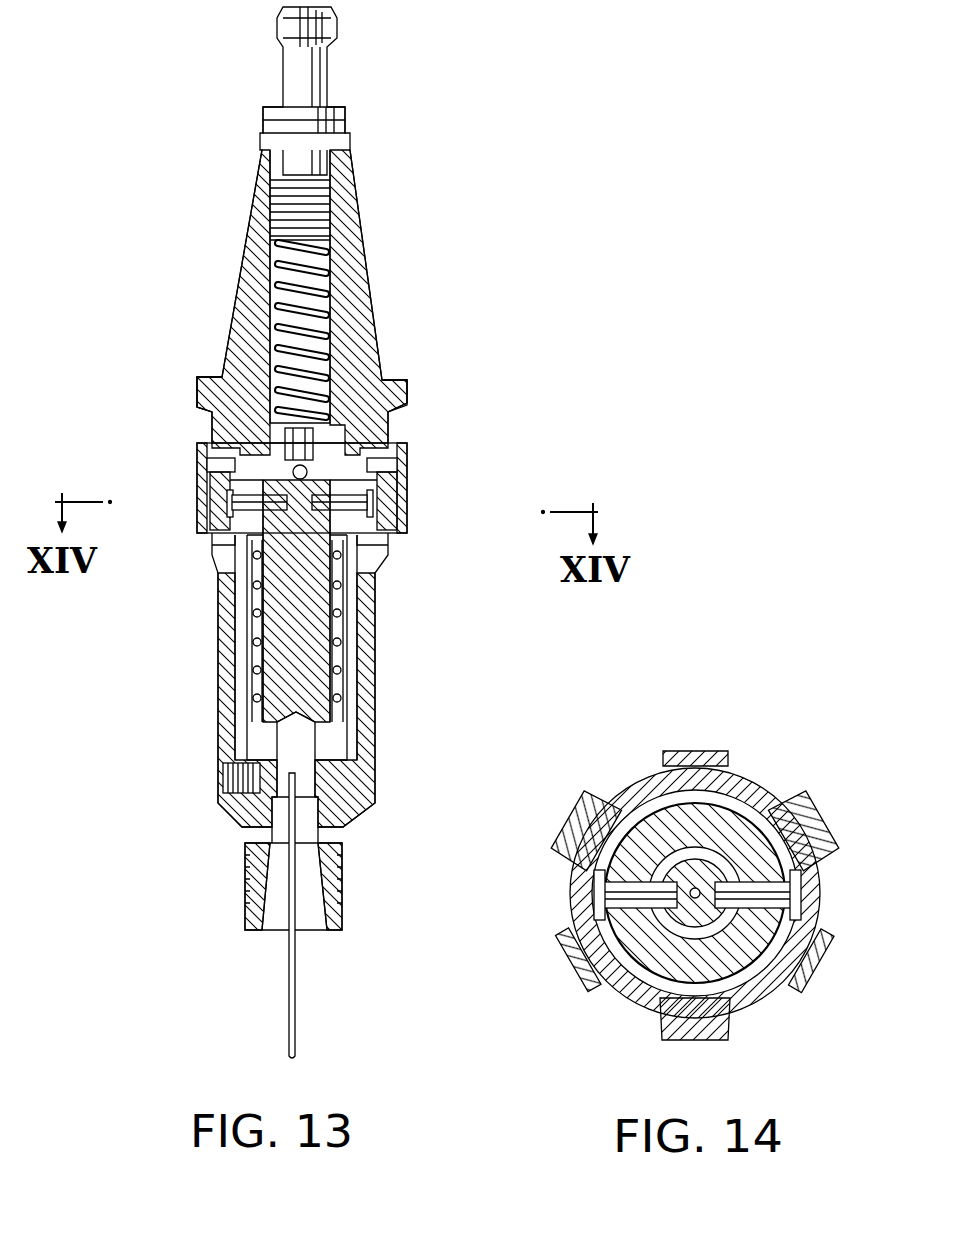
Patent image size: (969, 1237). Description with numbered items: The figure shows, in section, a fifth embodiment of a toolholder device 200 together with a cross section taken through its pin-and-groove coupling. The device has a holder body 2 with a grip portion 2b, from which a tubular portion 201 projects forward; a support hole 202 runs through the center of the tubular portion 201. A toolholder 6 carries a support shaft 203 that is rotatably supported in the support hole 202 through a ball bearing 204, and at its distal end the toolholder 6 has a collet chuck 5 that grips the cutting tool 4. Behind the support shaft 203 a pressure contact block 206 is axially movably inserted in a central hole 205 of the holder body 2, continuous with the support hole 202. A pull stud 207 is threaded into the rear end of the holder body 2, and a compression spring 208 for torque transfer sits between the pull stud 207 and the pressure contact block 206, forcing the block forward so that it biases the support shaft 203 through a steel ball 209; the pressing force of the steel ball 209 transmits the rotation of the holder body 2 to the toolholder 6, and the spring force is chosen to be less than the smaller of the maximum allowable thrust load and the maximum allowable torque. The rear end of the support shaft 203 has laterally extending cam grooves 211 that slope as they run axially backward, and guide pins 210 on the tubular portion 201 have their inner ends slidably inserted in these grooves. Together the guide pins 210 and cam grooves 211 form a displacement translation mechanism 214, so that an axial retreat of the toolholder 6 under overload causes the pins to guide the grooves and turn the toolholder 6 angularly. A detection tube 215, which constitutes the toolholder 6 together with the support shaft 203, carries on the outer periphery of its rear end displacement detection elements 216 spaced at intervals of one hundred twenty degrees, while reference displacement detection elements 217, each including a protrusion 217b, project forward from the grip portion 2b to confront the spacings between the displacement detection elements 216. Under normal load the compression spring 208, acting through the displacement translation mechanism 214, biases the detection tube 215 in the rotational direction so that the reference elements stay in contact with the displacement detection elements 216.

In FIG. 13, the toolholder device 200 is at (228, 274).
In FIG. 13, the holder body 2 is at (356, 195).
In FIG. 13, the grip portion 2b is at (400, 393).
In FIG. 13, the pull stud 207 is at (347, 121).
In FIG. 13, the compression spring 208 is at (320, 263).
In FIG. 13, the central hole 205 is at (325, 305).
In FIG. 13, the pressure contact block 206 is at (318, 445).
In FIG. 13, the steel ball 209 is at (307, 470).
In FIG. 13, the guide pins 210 is at (345, 507).
In FIG. 14, the guide pins 210 is at (610, 888).
In FIG. 13, the cam grooves 211 is at (330, 497).
In FIG. 14, the cam grooves 211 is at (610, 905).
In FIG. 13, the displacement translation mechanism 214 is at (473, 475).
In FIG. 14, the displacement translation mechanism 214 is at (508, 873).
In FIG. 13, the reference displacement detection elements 217 is at (203, 505).
In FIG. 14, the protrusion 217b is at (697, 752).
In FIG. 13, the displacement detection elements 216 is at (205, 535).
In FIG. 14, the displacement detection elements 216 is at (578, 826).
In FIG. 13, the detection tube 215 is at (222, 620).
In FIG. 14, the detection tube 215 is at (760, 990).
In FIG. 13, the tubular portion 201 is at (362, 590).
In FIG. 14, the tubular portion 201 is at (735, 820).
In FIG. 13, the support hole 202 is at (343, 640).
In FIG. 13, the support shaft 203 is at (278, 686).
In FIG. 14, the support shaft 203 is at (687, 920).
In FIG. 13, the ball bearing 204 is at (245, 650).
In FIG. 13, the toolholder 6 is at (213, 741).
In FIG. 13, the collet chuck 5 is at (343, 879).
In FIG. 13, the cutting tool 4 is at (297, 1008).